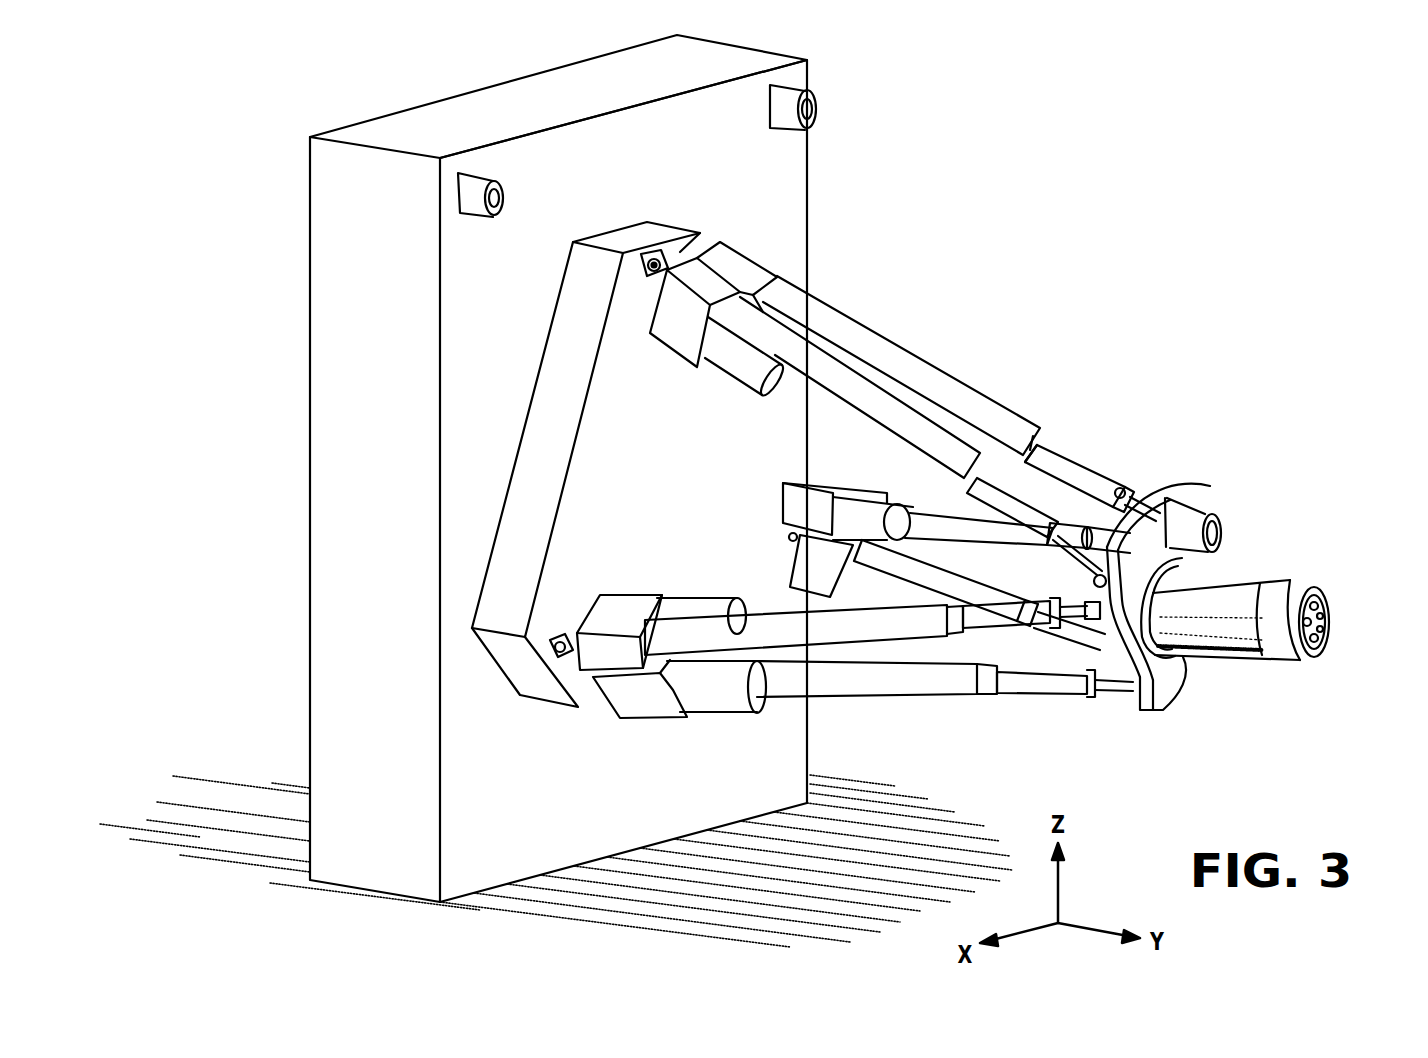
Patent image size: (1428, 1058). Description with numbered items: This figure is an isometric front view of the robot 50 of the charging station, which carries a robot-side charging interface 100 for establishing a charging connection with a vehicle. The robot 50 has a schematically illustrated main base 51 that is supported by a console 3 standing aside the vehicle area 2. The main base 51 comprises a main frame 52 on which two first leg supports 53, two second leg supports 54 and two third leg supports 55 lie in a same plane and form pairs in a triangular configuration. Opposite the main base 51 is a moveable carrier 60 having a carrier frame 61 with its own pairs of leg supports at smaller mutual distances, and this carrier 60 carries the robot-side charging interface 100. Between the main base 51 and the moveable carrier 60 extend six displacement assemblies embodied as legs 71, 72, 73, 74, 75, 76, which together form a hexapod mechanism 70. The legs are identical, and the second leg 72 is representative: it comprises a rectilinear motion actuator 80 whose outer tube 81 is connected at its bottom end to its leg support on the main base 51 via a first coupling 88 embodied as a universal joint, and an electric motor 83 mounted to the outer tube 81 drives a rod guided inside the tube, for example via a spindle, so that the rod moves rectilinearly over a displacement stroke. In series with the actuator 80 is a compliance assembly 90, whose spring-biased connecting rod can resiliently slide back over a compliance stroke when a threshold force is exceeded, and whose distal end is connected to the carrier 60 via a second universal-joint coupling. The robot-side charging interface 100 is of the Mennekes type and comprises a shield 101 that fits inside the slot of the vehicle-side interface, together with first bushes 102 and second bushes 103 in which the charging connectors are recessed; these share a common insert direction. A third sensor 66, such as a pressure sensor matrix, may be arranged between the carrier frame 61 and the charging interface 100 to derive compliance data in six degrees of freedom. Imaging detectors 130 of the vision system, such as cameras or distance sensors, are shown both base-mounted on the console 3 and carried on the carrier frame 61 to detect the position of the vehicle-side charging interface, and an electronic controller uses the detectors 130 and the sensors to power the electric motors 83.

The vehicle area 2 is at (746, 899).
The console 3 is at (327, 722).
The robot 50 is at (1000, 272).
The main base 51 is at (610, 370).
The main frame 52 is at (533, 487).
The first leg supports 53 is at (668, 250).
The second leg supports 54 is at (560, 655).
The third leg supports 55 is at (790, 532).
The moveable carrier 60 is at (1140, 525).
The carrier frame 61 is at (1173, 690).
The third sensor 66 is at (1190, 572).
The hexapod mechanism 70 is at (961, 398).
The first leg 71 is at (995, 427).
The second leg 72 is at (940, 457).
The third leg 73 is at (835, 633).
The fourth leg 74 is at (922, 680).
The fifth leg 75 is at (1038, 628).
The sixth leg 76 is at (1067, 467).
The rectilinear motion actuator 80 is at (935, 397).
The outer tube 81 is at (868, 407).
The electric motor 83 is at (742, 362).
The first coupling 88 is at (650, 260).
The compliance assembly 90 is at (1073, 467).
The robot-side charging interface 100 is at (1278, 637).
The shield 101 is at (1303, 597).
The first bushes 102 is at (1333, 643).
The second bushes 103 is at (1333, 607).
The imaging detectors 130 is at (470, 187).